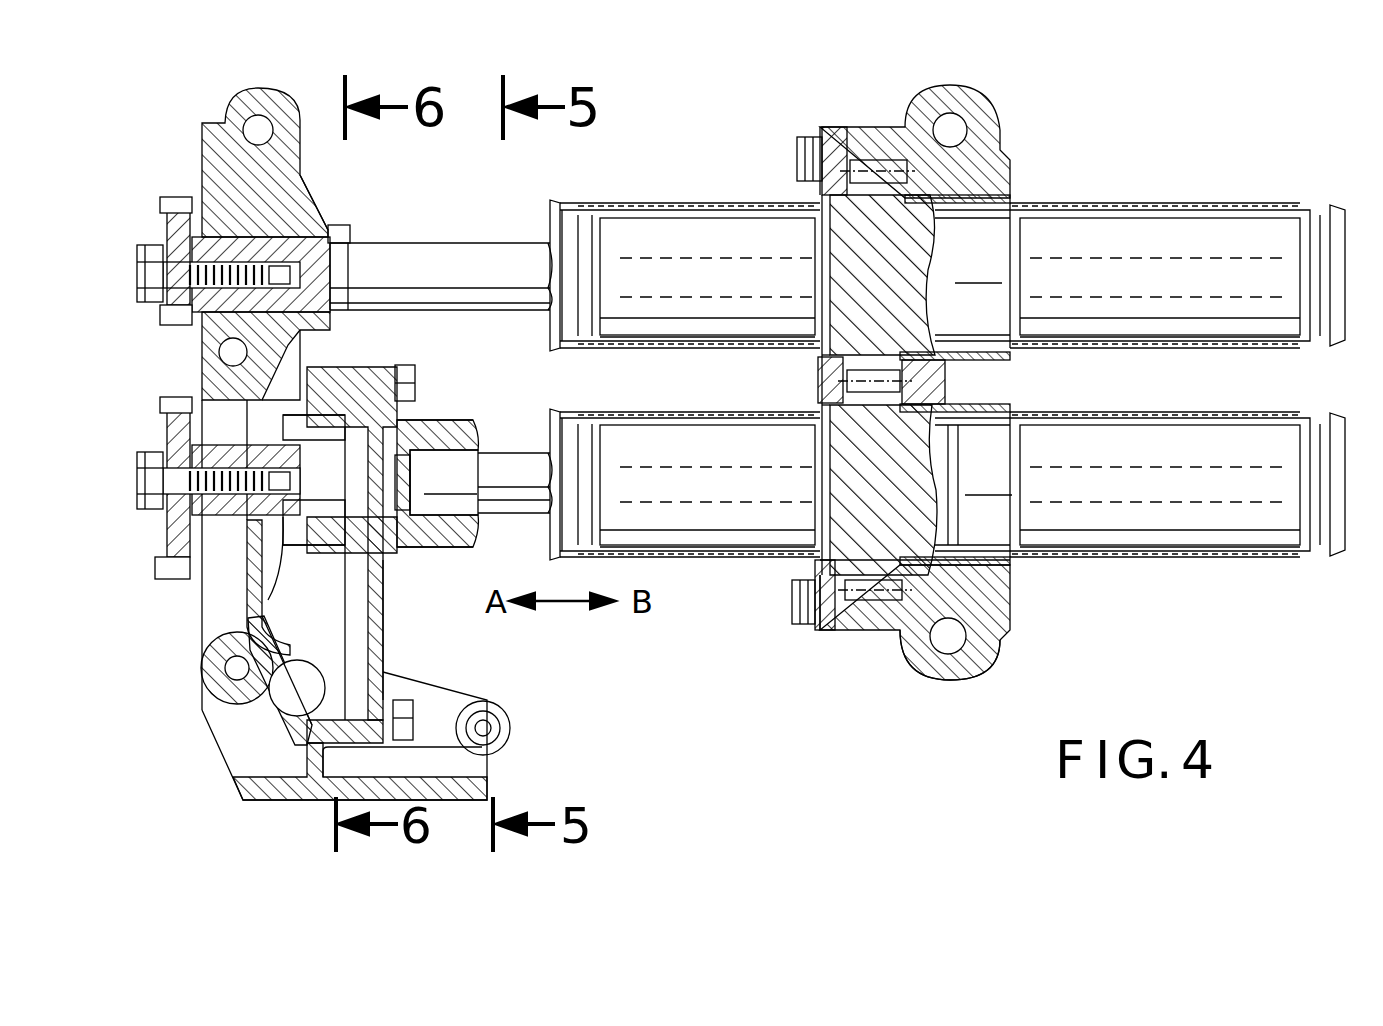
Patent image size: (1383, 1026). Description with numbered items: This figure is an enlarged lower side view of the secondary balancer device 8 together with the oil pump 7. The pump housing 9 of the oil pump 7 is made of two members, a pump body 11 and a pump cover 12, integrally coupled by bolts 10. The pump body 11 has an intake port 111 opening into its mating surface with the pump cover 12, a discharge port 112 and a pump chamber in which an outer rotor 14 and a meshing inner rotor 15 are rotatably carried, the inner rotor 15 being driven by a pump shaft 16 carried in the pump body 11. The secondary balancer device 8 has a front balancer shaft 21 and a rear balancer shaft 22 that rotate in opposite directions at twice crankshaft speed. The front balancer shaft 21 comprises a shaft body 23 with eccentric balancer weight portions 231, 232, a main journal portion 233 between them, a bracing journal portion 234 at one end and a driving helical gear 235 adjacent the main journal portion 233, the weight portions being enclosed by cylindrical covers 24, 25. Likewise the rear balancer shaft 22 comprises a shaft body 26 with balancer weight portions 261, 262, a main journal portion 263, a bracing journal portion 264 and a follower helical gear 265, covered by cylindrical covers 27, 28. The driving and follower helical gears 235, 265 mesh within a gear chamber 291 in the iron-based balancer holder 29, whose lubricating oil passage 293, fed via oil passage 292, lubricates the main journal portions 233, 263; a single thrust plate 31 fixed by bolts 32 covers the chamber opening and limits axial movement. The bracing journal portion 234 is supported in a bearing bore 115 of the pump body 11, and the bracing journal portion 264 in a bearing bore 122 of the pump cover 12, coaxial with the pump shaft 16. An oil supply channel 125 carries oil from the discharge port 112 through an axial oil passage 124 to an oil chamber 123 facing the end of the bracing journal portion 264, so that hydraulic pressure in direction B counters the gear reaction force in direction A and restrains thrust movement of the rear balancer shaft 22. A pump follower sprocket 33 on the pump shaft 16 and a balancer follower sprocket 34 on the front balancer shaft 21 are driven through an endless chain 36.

The oil pump 7 is at (195, 640).
The secondary balancer device 8 is at (1090, 570).
The pump housing 9 is at (500, 145).
The bolts 10 is at (405, 368).
The pump body 11 is at (365, 225).
The intake port 111 is at (254, 492).
The discharge port 112 is at (275, 648).
The bearing bore 115 is at (342, 225).
The pump cover 12 is at (372, 350).
The bearing bore 122 is at (520, 450).
The oil chamber 123 is at (455, 445).
The axial oil passage 124 is at (395, 548).
The oil supply channel 125 is at (385, 600).
The outer rotor 14 is at (283, 545).
The inner rotor 15 is at (330, 548).
The pump shaft 16 is at (215, 540).
The front balancer shaft 21 is at (1240, 195).
The rear balancer shaft 22 is at (1211, 402).
The shaft body 23 is at (958, 233).
The balancer weight portion 231 is at (700, 228).
The balancer weight portion 232 is at (1148, 245).
The main journal portion 233 is at (972, 275).
The bracing journal portion 234 is at (295, 200).
The driving helical gear 235 is at (870, 160).
The cylindrical cover 24 is at (652, 195).
The cylindrical cover 25 is at (1079, 195).
The shaft body 26 is at (957, 456).
The balancer weight portion 261 is at (752, 440).
The balancer weight portion 262 is at (1160, 440).
The main journal portion 263 is at (974, 484).
The bracing journal portion 264 is at (436, 482).
The follower helical gear 265 is at (875, 602).
The cylindrical cover 27 is at (692, 402).
The cylindrical cover 28 is at (1108, 402).
The balancer holder 29 is at (1000, 128).
The gear chamber 291 is at (840, 632).
The oil passage 292 is at (975, 668).
The lubricating oil passage 293 is at (955, 170).
The thrust plate 31 is at (820, 572).
The bolts 32 is at (805, 158).
The pump follower sprocket 33 is at (172, 400).
The balancer follower sprocket 34 is at (190, 318).
The endless chain 36 is at (172, 197).